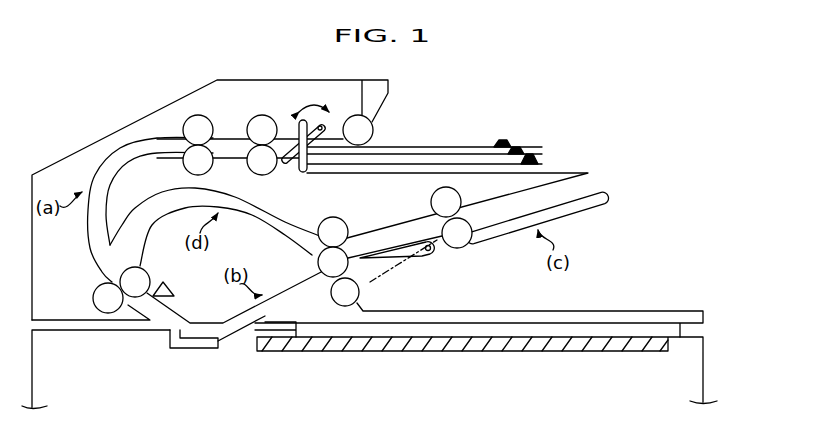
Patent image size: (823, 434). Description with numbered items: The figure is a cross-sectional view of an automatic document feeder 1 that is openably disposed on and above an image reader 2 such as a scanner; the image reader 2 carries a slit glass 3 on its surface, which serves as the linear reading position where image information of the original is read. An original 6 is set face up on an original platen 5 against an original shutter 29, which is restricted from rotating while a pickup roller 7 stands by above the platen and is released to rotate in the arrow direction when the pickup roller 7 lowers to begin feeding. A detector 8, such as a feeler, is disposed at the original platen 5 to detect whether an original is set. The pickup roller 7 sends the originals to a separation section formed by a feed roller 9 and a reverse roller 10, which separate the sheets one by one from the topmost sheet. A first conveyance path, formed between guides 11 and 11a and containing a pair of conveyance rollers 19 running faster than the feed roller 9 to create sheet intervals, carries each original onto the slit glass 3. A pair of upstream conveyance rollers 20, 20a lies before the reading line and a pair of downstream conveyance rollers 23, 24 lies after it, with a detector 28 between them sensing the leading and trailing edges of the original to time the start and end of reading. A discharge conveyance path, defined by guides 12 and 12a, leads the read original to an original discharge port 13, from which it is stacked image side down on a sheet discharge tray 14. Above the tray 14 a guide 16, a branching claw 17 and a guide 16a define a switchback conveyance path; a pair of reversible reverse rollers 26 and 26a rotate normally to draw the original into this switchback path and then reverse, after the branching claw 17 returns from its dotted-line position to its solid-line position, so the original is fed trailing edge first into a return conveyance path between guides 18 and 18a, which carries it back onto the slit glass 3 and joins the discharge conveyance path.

The automatic document feeder 1 is at (114, 94).
The image reader 2 is at (713, 348).
The slit glass 3 is at (195, 349).
The original platen 5 is at (557, 171).
The original 6 is at (450, 146).
The pickup roller 7 is at (371, 132).
The detector 8 is at (328, 125).
The feed roller 9 is at (254, 118).
The reverse roller 10 is at (268, 171).
The guide 11 is at (113, 155).
The guide 11a is at (133, 163).
The guide 12 is at (234, 338).
The guide 12a is at (234, 317).
The original discharge port 13 is at (358, 273).
The sheet discharge tray 14 is at (592, 309).
The guide 16 is at (588, 211).
The guide 16a is at (591, 187).
The branching claw 17 is at (428, 258).
The guide 18 is at (235, 196).
The guide 18a is at (249, 215).
The pair of conveyance rollers 19 is at (219, 107).
The upstream conveyance roller 20 is at (99, 291).
The upstream conveyance roller 20a is at (139, 268).
The downstream conveyance roller 23 is at (345, 307).
The downstream conveyance roller 24 is at (318, 264).
The reverse roller 26 is at (461, 247).
The reverse roller 26a is at (432, 203).
The detector 28 is at (166, 282).
The original shutter 29 is at (300, 118).